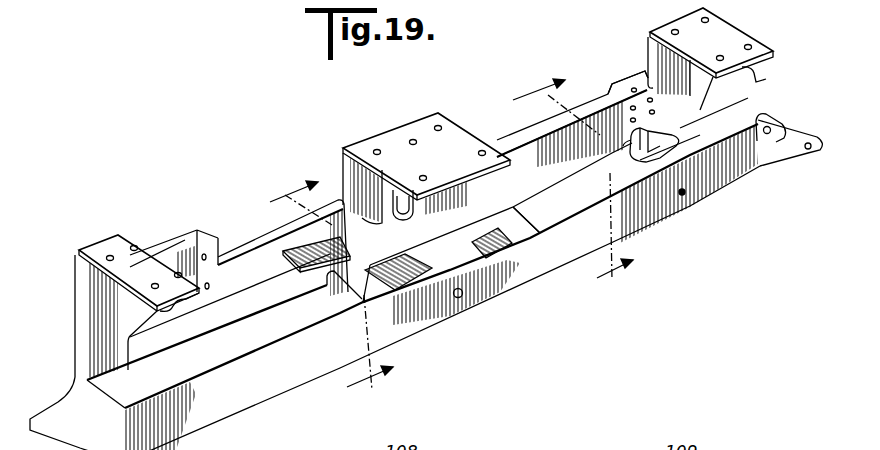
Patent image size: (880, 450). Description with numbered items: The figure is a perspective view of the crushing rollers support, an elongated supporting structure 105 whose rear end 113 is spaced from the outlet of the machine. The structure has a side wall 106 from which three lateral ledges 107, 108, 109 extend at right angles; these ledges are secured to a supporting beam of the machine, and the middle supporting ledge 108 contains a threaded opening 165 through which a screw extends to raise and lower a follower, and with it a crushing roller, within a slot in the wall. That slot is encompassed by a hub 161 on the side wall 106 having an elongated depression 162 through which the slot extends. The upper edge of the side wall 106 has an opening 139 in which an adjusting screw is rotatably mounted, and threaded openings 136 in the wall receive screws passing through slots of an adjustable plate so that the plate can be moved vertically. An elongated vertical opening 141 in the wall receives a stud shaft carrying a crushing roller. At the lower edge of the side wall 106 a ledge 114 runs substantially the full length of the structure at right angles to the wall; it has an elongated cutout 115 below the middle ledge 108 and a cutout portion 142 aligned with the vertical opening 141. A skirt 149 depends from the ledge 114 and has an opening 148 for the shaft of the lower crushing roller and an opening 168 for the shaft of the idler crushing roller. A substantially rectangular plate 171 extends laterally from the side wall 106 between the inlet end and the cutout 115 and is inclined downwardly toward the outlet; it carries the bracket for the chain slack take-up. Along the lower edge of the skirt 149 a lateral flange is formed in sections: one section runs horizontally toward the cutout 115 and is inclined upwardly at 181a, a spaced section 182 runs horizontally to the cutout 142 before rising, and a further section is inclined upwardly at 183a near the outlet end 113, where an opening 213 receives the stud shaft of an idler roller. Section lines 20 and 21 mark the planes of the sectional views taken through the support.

The section line 20- 20 is at (331, 290).
The section line 21- 21 is at (573, 184).
The supporting structure 105 is at (432, 340).
The side wall 106 is at (240, 268).
The lateral ledge 107 is at (125, 240).
The middle supporting ledge 108 is at (452, 140).
The lateral ledge 109 is at (727, 32).
The rear end 113 is at (764, 113).
The ledge 114 is at (242, 340).
The elongated cutout 115 is at (457, 255).
The threaded openings 136 is at (653, 113).
The opening 139 is at (634, 87).
The elongated vertical opening 141 is at (636, 141).
The cutout portion 142 is at (660, 157).
The opening 148 is at (685, 197).
The skirt 149 is at (630, 212).
The hub 161 is at (423, 207).
The elongated depression 162 is at (404, 221).
The threaded opening 165 is at (413, 140).
The opening 168 is at (460, 300).
The rectangular plate 171 is at (282, 266).
The inclined portion 181a is at (402, 287).
The flange section 182 is at (507, 235).
The inclined portion 183a is at (778, 125).
The opening 213 is at (808, 150).